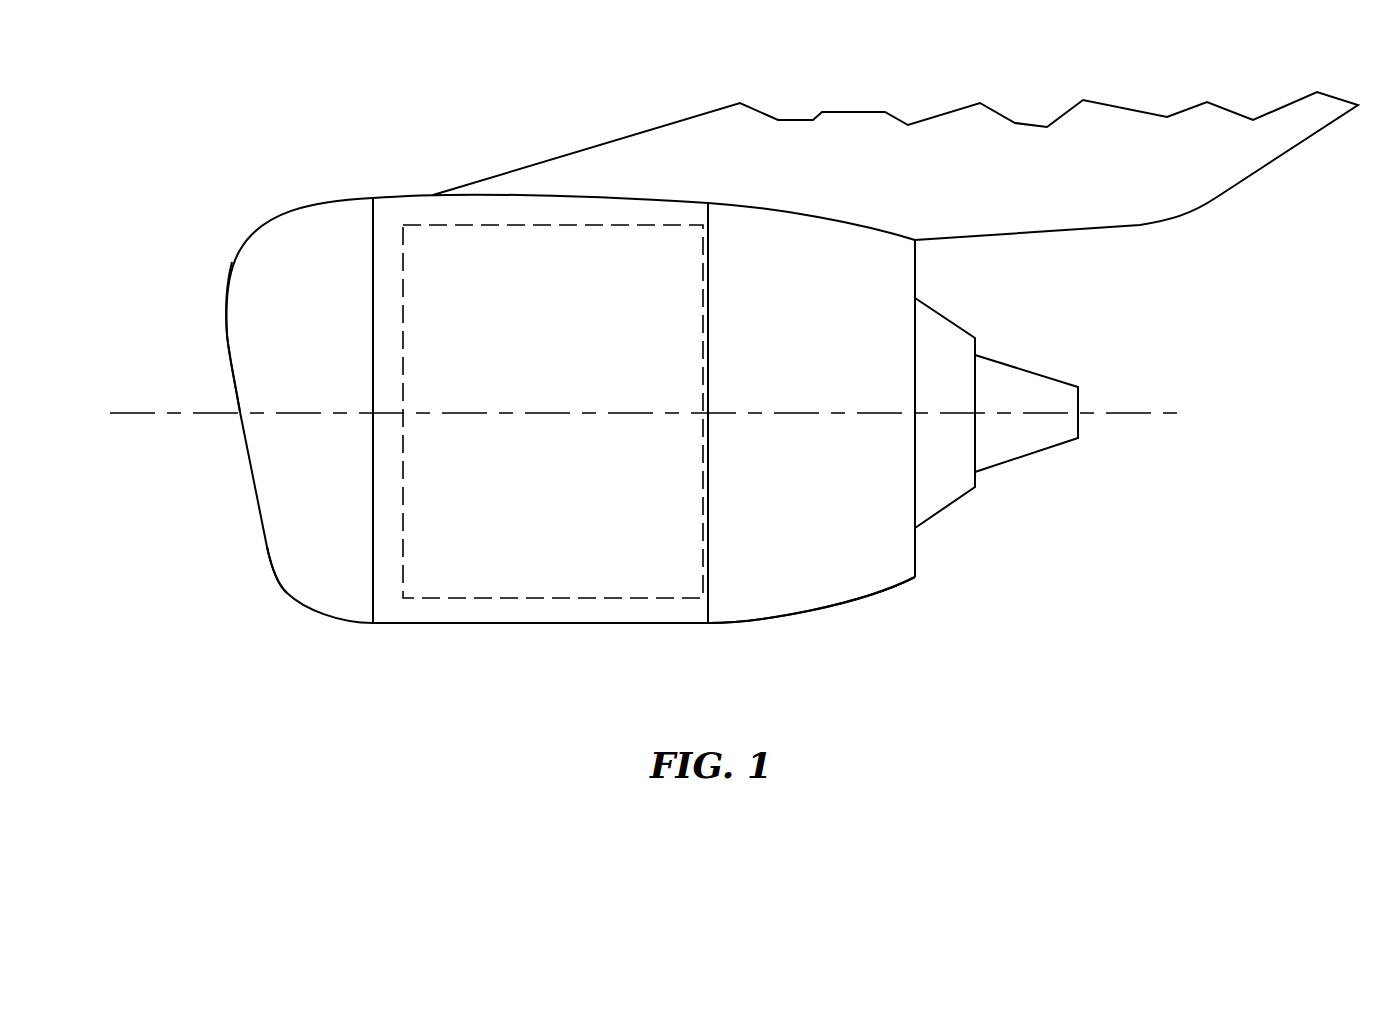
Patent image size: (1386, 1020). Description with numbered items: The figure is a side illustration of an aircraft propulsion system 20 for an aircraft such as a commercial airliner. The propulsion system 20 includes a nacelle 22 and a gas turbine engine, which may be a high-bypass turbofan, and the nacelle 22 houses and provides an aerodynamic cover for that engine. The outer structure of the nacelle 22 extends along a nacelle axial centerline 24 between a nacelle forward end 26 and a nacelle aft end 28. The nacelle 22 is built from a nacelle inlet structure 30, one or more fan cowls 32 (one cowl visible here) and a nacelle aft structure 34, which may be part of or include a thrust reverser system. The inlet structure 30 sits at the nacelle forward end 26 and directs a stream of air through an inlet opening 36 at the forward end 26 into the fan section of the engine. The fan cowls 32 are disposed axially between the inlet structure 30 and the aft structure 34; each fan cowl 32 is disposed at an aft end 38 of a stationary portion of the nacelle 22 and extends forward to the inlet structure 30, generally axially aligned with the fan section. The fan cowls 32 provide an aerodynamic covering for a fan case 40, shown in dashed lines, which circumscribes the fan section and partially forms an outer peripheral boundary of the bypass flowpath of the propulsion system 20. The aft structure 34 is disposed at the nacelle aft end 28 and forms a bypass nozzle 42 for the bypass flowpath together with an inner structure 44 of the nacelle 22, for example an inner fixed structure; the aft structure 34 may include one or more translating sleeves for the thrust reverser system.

The aircraft propulsion system 20 is at (250, 178).
The nacelle 22 is at (343, 182).
The nacelle axial centerline 24 is at (1163, 418).
The nacelle forward end 26 is at (227, 328).
The nacelle aft end 28 is at (915, 265).
The nacelle inlet structure 30 is at (280, 602).
The fan cowl 32 is at (502, 640).
The nacelle aft structure 34 is at (805, 630).
The inlet opening 36 is at (218, 375).
The aft end of stationary portion of the nacelle 38 is at (708, 217).
The fan case 40 is at (648, 600).
The bypass nozzle 42 is at (928, 553).
The inner structure 44 is at (953, 505).